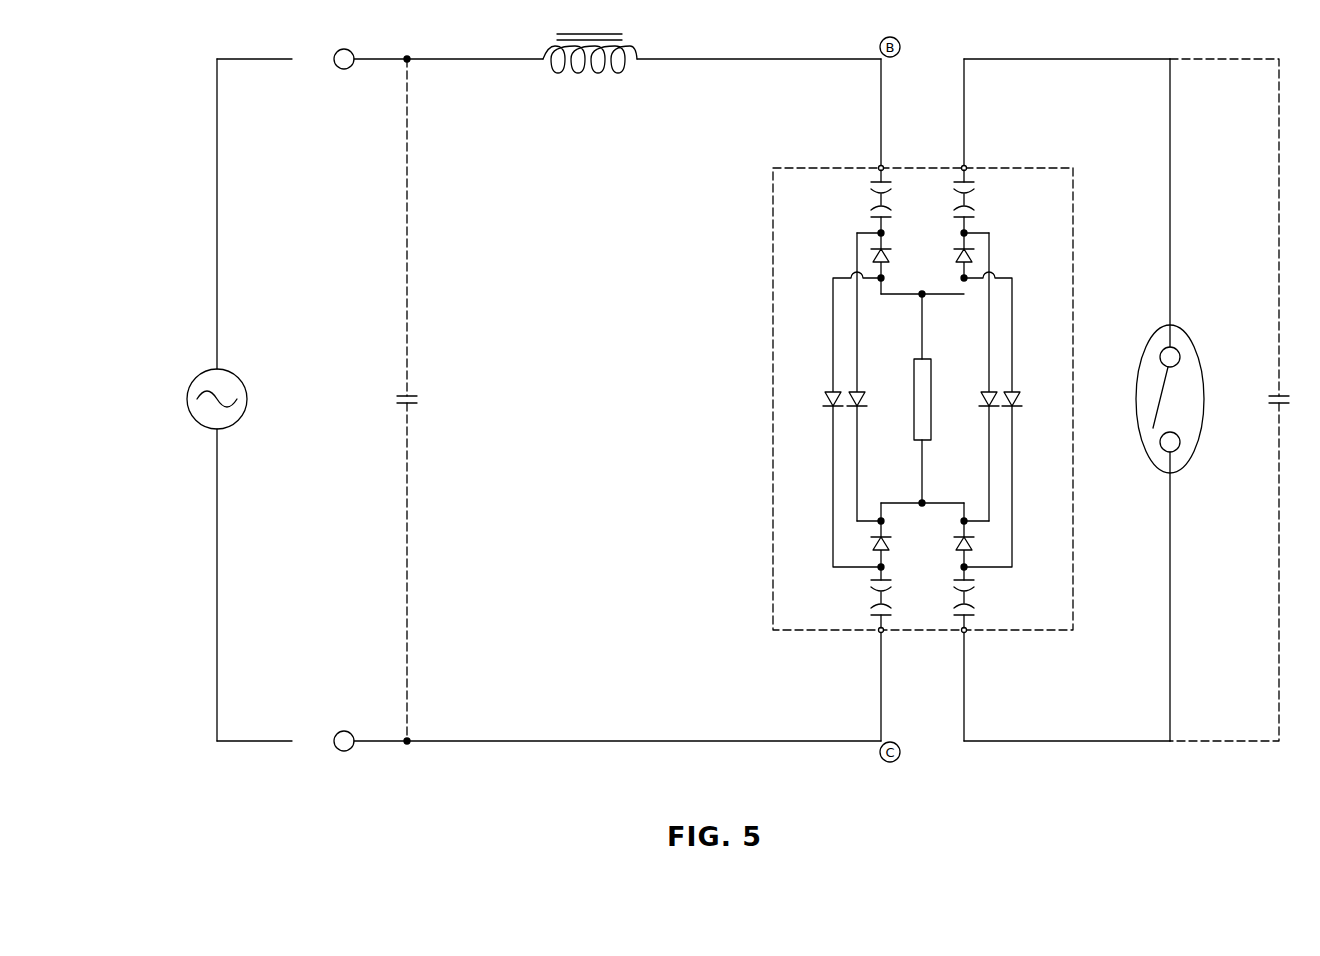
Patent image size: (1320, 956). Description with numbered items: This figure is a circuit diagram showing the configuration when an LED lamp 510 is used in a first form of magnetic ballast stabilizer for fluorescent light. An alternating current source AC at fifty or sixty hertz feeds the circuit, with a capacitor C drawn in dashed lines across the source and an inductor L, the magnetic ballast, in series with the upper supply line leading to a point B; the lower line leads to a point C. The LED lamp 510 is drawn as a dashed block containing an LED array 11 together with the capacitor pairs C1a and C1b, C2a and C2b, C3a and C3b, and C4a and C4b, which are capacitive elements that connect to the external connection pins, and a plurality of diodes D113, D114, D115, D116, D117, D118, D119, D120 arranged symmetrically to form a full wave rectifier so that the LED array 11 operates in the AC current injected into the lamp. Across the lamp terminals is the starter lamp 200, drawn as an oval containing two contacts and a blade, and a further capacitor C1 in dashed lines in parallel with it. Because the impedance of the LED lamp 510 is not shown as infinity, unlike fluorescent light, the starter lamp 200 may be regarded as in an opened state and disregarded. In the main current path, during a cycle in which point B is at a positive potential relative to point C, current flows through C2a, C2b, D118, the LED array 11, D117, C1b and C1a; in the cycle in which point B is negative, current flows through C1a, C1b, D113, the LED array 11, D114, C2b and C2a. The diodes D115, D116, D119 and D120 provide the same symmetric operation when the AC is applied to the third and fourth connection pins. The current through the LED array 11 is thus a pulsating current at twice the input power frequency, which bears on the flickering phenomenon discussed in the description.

The LED lamp 510 is at (894, 399).
The starter lamp 200 is at (1192, 342).
The LED array 11 is at (914, 380).
The capacitor C1 is at (1242, 400).
The capacitor C is at (414, 400).
The inductor L is at (590, 43).
The AC power source 50/60Hz AC is at (196, 400).
The diode D113 is at (873, 544).
The diode D114 is at (873, 255).
The diode D115 is at (955, 544).
The diode D116 is at (955, 255).
The diode D117 is at (824, 400).
The diode D118 is at (862, 400).
The diode D119 is at (980, 400).
The diode D120 is at (1018, 400).
The capacitor C1a is at (874, 610).
The capacitor C1b is at (874, 581).
The capacitor C2a is at (874, 180).
The capacitor C2b is at (874, 213).
The capacitor C3a is at (971, 610).
The capacitor C3b is at (971, 581).
The capacitor C4a is at (971, 180).
The capacitor C4b is at (971, 213).